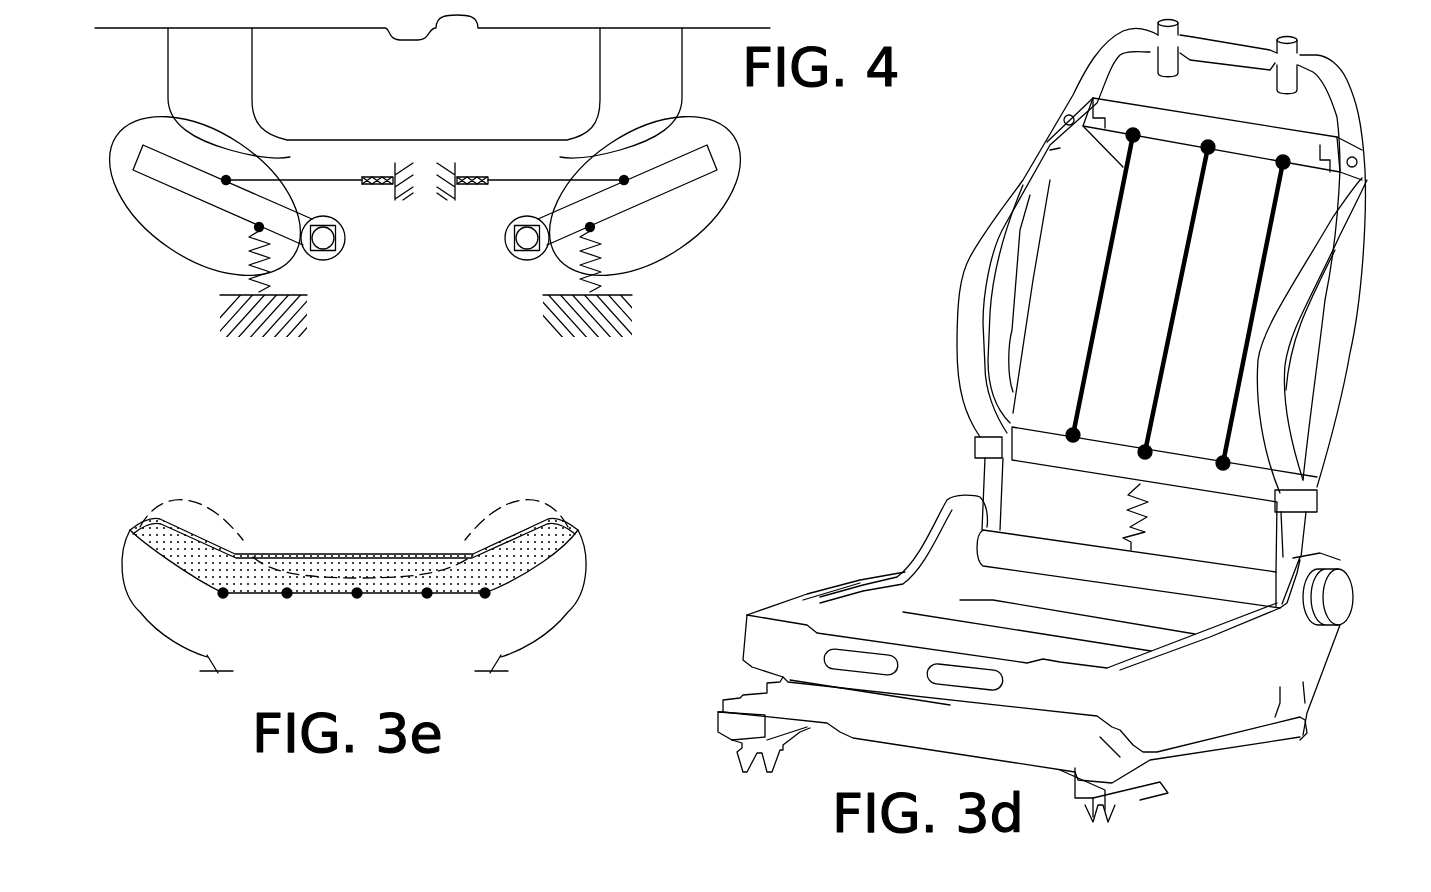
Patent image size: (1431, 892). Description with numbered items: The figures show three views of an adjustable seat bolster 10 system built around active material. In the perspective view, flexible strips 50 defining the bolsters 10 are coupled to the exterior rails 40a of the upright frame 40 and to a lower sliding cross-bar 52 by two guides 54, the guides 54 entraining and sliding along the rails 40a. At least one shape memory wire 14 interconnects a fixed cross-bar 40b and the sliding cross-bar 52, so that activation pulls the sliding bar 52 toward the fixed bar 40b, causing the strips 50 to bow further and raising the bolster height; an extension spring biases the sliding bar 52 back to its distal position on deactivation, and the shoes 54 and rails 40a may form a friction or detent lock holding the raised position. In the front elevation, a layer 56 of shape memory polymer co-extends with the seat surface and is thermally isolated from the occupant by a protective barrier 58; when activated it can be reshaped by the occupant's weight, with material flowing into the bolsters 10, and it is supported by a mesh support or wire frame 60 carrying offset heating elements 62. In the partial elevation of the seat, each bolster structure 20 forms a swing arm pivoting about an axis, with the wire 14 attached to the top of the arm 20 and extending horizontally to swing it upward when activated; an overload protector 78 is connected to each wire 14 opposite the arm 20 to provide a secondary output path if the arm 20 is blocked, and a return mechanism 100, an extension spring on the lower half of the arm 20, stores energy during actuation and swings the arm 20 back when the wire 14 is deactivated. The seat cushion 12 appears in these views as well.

In FIG. 4, the bolster 10 is at (83, 195).
In FIG. 4, the seat cushion 12 is at (442, 98).
In FIG. 3E, the seat cushion 12 is at (158, 485).
In FIG. 4, the shape memory wire 14 is at (268, 180).
In FIG. 3D, the shape memory wire 14 is at (1050, 147).
In FIG. 4, the structure 20 is at (687, 185).
In FIG. 4, the frame 40 is at (220, 295).
In FIG. 3D, the frame 40 is at (1383, 23).
In FIG. 3D, the exterior rail 40a is at (1380, 411).
In FIG. 3D, the fixed cross-bar 40b is at (1121, 99).
In FIG. 3D, the flexible strip 50 is at (958, 318).
In FIG. 3D, the sliding cross-bar 52 is at (1003, 462).
In FIG. 3D, the guide 54 is at (1367, 480).
In FIG. 3E, the layer of SMP material 56 is at (354, 566).
In FIG. 3E, the protective barrier 58 is at (280, 552).
In FIG. 3E, the mesh support or wire frame 60 is at (430, 607).
In FIG. 3E, the heating element 62 is at (357, 599).
In FIG. 4, the overload protector 78 is at (458, 183).
In FIG. 4, the return mechanism 100 is at (273, 268).
In FIG. 3D, the return mechanism 100 is at (1128, 520).